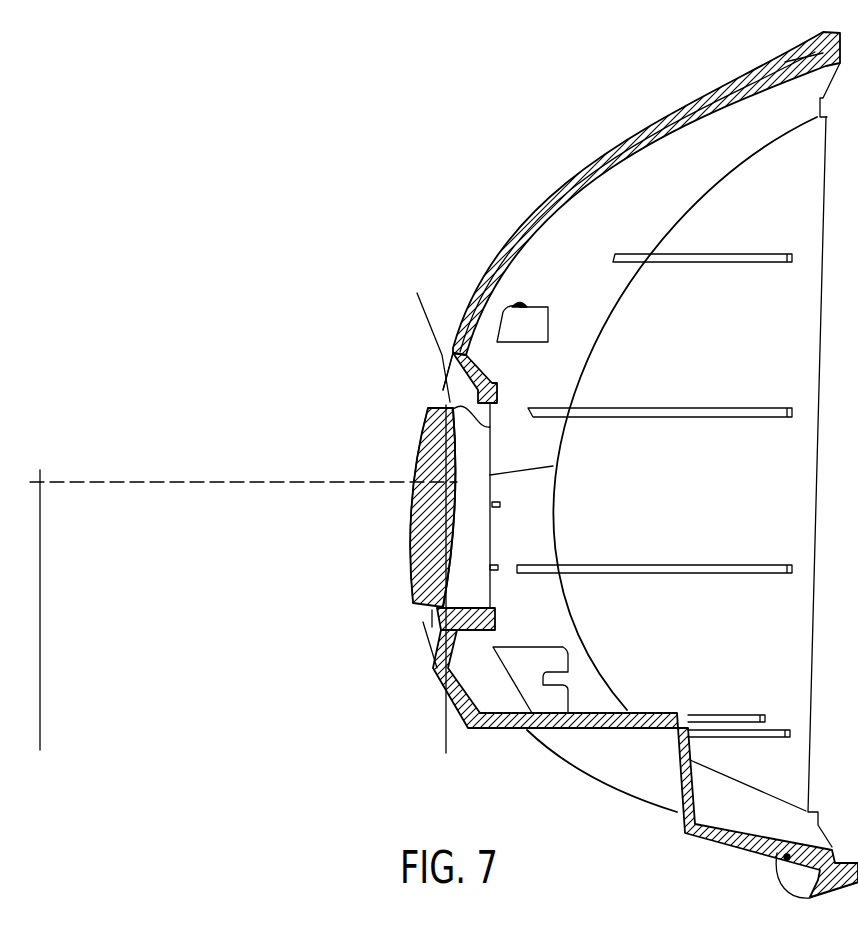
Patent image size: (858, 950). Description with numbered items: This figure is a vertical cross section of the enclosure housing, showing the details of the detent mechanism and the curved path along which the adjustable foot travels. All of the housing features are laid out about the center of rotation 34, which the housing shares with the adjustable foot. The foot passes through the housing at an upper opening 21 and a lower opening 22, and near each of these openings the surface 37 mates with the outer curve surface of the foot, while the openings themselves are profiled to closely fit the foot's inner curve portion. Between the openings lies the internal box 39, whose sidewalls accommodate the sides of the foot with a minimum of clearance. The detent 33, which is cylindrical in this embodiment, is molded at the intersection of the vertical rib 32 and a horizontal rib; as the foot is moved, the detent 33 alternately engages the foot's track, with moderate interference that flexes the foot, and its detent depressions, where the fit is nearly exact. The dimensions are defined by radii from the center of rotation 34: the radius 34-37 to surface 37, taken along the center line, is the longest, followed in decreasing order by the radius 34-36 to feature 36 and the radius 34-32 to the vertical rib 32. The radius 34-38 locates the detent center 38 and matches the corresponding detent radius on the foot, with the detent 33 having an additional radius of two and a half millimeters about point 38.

The upper opening 21 is at (490, 412).
The lower opening 22 is at (447, 605).
The vertical rib 32 is at (457, 522).
The detent 33 is at (502, 462).
The center of rotation 34 is at (42, 482).
The surface at radius 34- 36 is at (490, 427).
The surface 37 is at (443, 388).
The detent center 38 is at (456, 490).
The internal box 39 is at (493, 513).
The radius 34-36 is at (413, 312).
The radius 34-37 is at (448, 355).
The radius 34-32 is at (442, 562).
The radius 34-38 is at (446, 736).